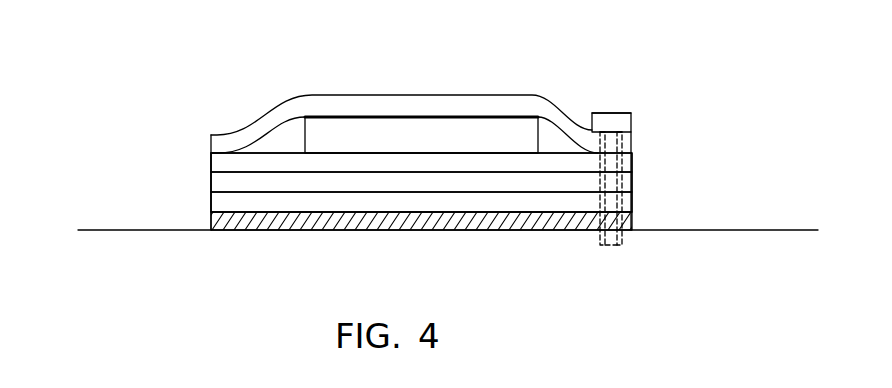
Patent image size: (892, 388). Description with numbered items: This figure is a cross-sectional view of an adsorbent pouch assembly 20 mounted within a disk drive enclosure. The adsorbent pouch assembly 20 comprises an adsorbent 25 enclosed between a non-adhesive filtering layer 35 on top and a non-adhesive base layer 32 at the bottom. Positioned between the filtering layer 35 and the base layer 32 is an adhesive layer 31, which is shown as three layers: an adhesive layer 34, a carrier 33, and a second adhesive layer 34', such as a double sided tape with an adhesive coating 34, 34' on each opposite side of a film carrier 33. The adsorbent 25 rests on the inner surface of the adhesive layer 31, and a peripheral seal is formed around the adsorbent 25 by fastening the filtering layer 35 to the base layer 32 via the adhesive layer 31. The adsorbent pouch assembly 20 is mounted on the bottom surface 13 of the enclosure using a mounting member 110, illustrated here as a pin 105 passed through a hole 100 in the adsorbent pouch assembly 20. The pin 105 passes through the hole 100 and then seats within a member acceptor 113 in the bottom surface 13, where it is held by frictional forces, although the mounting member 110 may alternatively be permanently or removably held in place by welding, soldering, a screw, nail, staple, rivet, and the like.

The bottom surface 13 is at (103, 229).
The adsorbent pouch assembly 20 is at (485, 58).
The adsorbent 25 is at (303, 138).
The adhesive layer 31 is at (638, 153).
The base layer 32 is at (635, 225).
The carrier 33 is at (211, 180).
The adhesive layer 34 is at (372, 186).
The adhesive layer 34' is at (402, 139).
The filtering layer 35 is at (247, 130).
The hole 100 is at (617, 142).
The pin 105 is at (597, 113).
The mounting member 110 is at (630, 114).
The member acceptor 113 is at (618, 238).